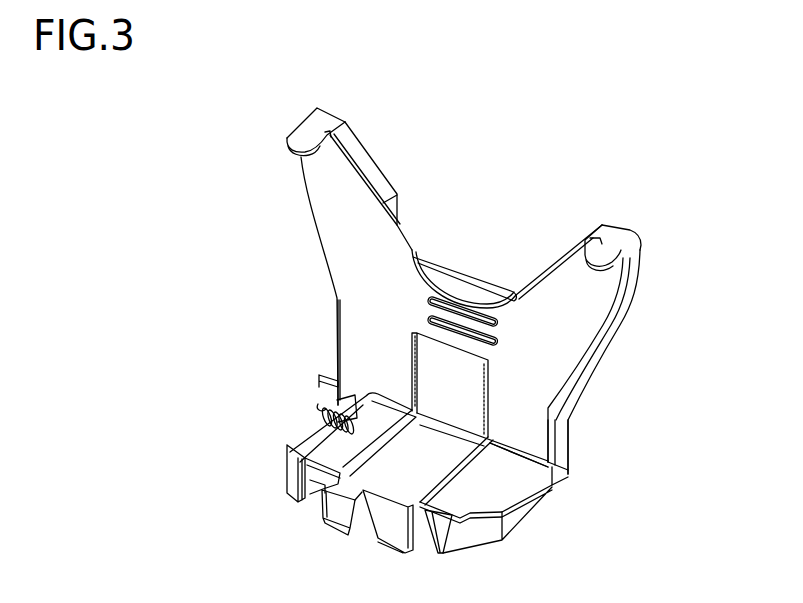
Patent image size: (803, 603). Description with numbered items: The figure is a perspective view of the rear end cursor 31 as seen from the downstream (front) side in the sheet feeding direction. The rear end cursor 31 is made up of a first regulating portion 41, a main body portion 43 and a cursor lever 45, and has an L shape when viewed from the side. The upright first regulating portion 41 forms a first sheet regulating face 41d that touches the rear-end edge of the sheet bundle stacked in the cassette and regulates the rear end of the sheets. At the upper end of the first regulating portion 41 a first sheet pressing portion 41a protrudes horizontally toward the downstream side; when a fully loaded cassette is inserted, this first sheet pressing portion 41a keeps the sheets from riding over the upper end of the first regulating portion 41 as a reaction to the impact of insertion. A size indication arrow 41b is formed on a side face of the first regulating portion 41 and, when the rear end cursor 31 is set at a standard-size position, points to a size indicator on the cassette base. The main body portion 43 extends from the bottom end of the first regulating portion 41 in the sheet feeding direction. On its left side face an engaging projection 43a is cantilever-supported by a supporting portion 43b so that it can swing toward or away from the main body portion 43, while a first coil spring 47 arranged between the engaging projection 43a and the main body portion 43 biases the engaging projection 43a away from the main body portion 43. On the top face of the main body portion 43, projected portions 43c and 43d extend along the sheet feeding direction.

The rear end cursor 31 is at (542, 167).
The first regulating portion 41 is at (585, 377).
The first sheet pressing portion 41a is at (307, 133).
The size indication arrow 41b is at (318, 378).
The first sheet regulating face 41d is at (360, 302).
The main body portion 43 is at (398, 478).
The engaging projection 43a is at (320, 407).
The supporting portion 43b is at (290, 464).
The projected portion 43c is at (338, 453).
The projected portion 43d is at (497, 492).
The cursor lever 45 is at (466, 268).
The first coil spring 47 is at (336, 403).